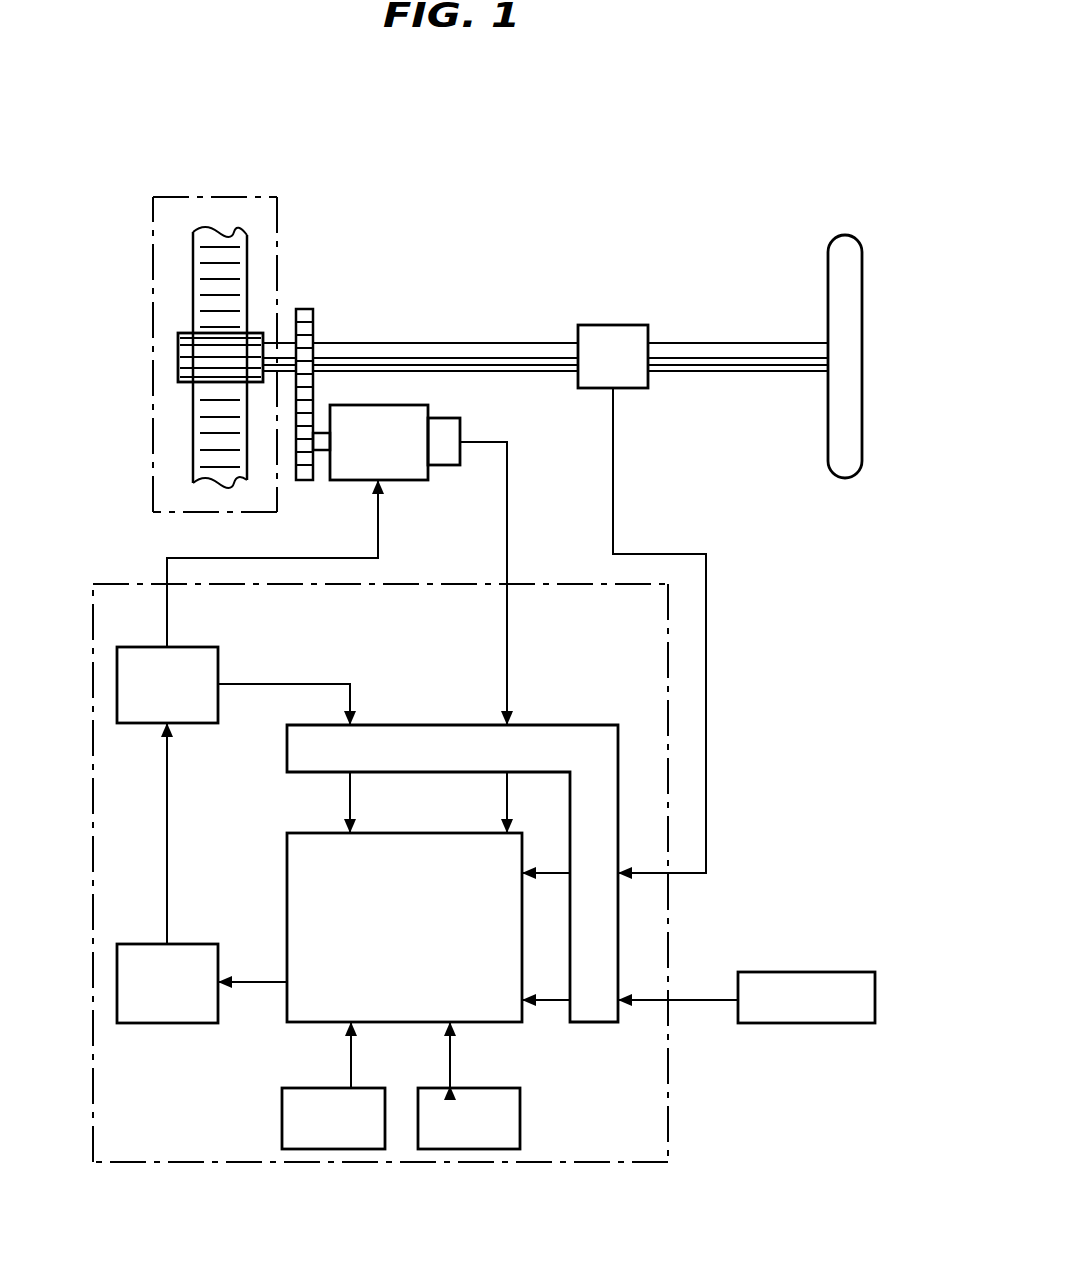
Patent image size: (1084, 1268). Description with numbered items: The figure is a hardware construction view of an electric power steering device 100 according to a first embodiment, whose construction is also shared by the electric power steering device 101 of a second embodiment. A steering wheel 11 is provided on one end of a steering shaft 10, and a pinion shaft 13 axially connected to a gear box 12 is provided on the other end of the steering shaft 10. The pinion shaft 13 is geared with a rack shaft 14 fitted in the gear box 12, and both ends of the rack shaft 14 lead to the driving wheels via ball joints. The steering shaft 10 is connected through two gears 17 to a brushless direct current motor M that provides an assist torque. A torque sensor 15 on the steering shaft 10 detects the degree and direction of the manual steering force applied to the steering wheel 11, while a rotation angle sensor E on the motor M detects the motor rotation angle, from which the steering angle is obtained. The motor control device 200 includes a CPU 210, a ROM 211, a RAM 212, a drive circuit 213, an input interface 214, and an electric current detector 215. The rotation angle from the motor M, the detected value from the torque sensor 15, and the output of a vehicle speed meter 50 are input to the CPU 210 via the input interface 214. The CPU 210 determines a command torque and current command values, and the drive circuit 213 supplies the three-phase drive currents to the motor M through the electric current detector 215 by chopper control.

The electric power steering device 100 is at (535, 218).
The electric power steering device 101 is at (479, 344).
The steering shaft 10 is at (782, 341).
The steering wheel 11 is at (843, 240).
The gear box 12 is at (153, 443).
The pinion shaft 13 is at (178, 357).
The rack shaft 14 is at (193, 278).
The torque sensor 15 is at (613, 325).
The gears 17 is at (313, 320).
The motor M is at (348, 465).
The rotation angle sensor E is at (455, 437).
The vehicle speed meter 50 is at (800, 972).
The motor control device 200 is at (150, 1163).
The CPU 210 is at (390, 833).
The ROM 211 is at (282, 1112).
The RAM 212 is at (520, 1115).
The drive circuit 213 is at (155, 1024).
The input interface 214 is at (575, 725).
The electric current detector 215 is at (150, 646).